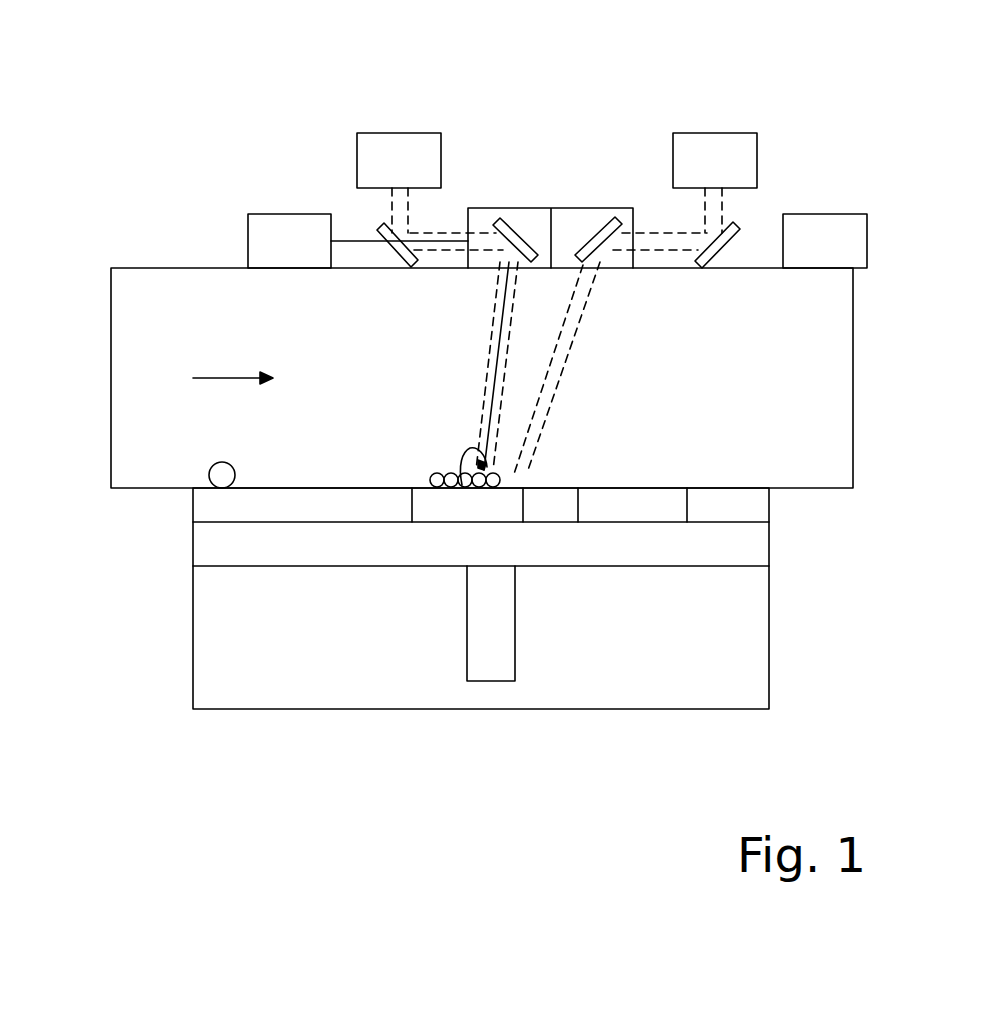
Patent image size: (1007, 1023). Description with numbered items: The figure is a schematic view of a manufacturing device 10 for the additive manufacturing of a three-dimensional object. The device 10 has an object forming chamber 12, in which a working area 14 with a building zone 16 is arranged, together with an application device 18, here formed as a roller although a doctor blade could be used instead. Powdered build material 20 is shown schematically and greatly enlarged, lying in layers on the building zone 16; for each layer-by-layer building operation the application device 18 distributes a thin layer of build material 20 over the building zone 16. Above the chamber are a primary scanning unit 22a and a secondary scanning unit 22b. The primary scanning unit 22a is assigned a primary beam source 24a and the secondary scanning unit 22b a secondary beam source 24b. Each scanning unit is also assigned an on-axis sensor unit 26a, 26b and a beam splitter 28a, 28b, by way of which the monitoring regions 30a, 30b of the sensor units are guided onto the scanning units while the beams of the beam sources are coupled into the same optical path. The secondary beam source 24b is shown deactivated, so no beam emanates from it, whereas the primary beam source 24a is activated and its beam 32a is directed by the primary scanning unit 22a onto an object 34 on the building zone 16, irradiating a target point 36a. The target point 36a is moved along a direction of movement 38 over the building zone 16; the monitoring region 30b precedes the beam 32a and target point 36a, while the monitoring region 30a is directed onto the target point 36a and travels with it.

The manufacturing device 10 is at (118, 252).
The object forming chamber 12 is at (827, 388).
The working area 14 is at (675, 467).
The building zone 16 is at (670, 403).
The application device 18 is at (208, 480).
The powdered build material 20 is at (458, 473).
The primary scanning unit 22a is at (515, 216).
The secondary scanning unit 22b is at (600, 218).
The primary beam source 24a is at (277, 214).
The secondary beam source 24b is at (846, 214).
The primary sensor unit 26a is at (377, 132).
The secondary sensor unit 26b is at (737, 133).
The beam splitter 28a is at (380, 225).
The beam splitter 28b is at (740, 223).
The monitoring region 30a is at (490, 370).
The monitoring region 30b is at (525, 470).
The beam 32a is at (500, 322).
The object 34 is at (462, 445).
The target point 36a is at (463, 488).
The direction of movement 38 is at (217, 378).